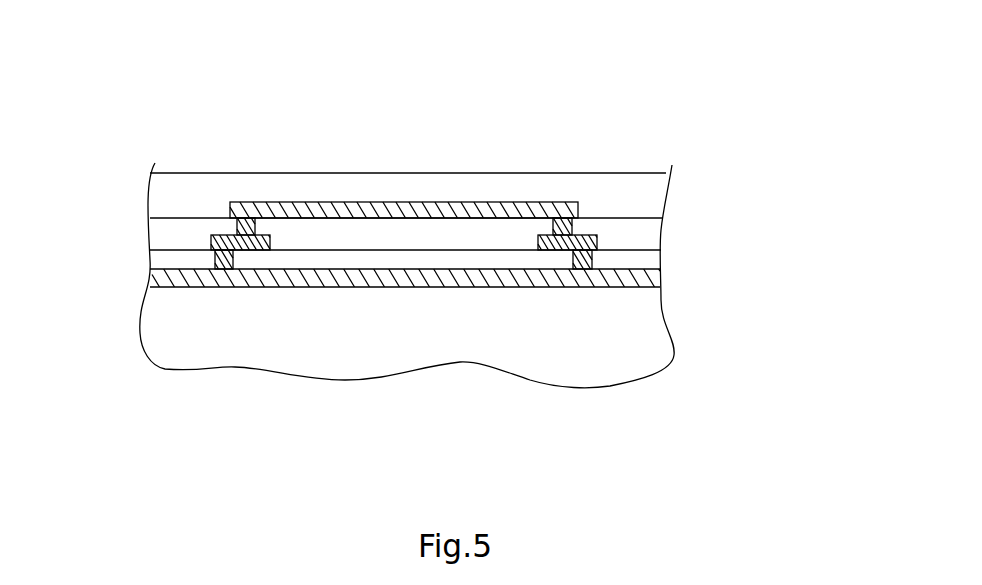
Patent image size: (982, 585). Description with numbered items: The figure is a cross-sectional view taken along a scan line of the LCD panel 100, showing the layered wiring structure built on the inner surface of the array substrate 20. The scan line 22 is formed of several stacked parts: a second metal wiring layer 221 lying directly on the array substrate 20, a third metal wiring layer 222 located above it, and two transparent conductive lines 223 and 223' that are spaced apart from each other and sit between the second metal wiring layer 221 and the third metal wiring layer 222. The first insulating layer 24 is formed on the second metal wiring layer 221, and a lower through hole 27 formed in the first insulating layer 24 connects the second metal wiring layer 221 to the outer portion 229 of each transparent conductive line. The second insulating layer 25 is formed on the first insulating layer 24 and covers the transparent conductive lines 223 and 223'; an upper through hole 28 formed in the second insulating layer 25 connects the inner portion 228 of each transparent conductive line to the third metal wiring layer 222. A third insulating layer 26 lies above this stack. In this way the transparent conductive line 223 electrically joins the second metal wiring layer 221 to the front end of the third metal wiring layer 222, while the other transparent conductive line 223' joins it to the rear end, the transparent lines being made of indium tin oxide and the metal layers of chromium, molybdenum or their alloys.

The LCD panel 100 is at (145, 97).
The array substrate 20 is at (192, 347).
The scan line 22 is at (168, 289).
The second metal wiring layer 221 is at (184, 295).
The third metal wiring layer 222 is at (375, 200).
The transparent conductive line 223 is at (198, 187).
The transparent conductive line 223' is at (589, 174).
The inner portion 228 is at (266, 233).
The outer portion 229 is at (217, 233).
The first insulating layer 24 is at (652, 260).
The second insulating layer 25 is at (150, 233).
The third insulating layer 26 is at (578, 185).
The lower through hole 27 is at (567, 262).
The upper through hole 28 is at (532, 208).